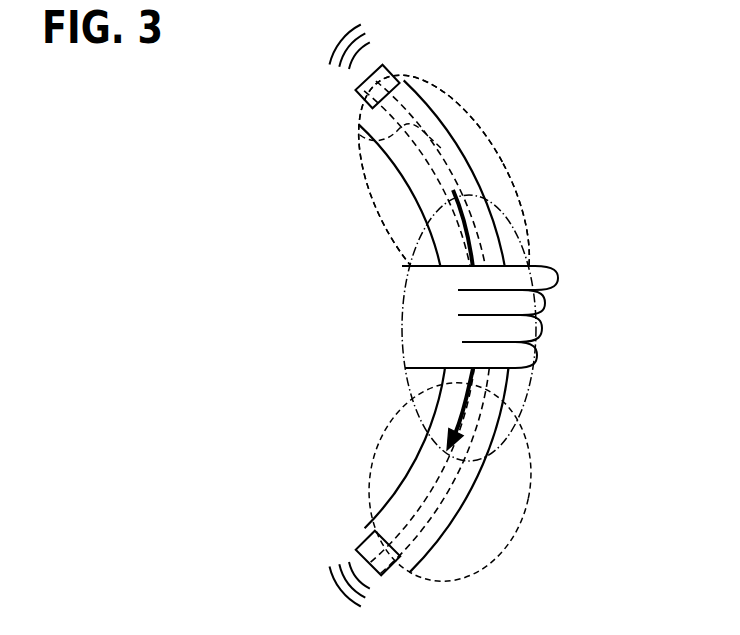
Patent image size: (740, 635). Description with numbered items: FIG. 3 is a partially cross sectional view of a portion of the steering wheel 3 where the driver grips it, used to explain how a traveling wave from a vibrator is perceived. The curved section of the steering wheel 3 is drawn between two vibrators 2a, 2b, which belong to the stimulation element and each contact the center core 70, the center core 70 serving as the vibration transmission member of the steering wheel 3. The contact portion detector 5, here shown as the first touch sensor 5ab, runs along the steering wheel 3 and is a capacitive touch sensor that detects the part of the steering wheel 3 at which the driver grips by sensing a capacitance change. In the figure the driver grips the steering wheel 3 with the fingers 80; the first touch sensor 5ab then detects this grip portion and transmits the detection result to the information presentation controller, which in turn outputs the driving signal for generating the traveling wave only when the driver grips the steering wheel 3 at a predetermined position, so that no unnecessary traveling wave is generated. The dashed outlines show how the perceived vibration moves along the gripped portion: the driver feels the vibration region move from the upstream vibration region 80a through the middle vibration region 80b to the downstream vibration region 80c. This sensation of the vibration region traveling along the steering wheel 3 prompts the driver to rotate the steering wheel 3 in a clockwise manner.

The vibrator 2a is at (387, 62).
The vibrator 2b is at (388, 566).
The steering wheel 3 is at (433, 143).
The contact portion detector 5 is at (477, 342).
The first touch sensor 5ab is at (441, 514).
The center core 70 is at (360, 166).
The fingers 80 is at (545, 304).
The upstream vibration region 80a is at (506, 168).
The middle vibration region 80b is at (533, 378).
The downstream vibration region 80c is at (530, 460).